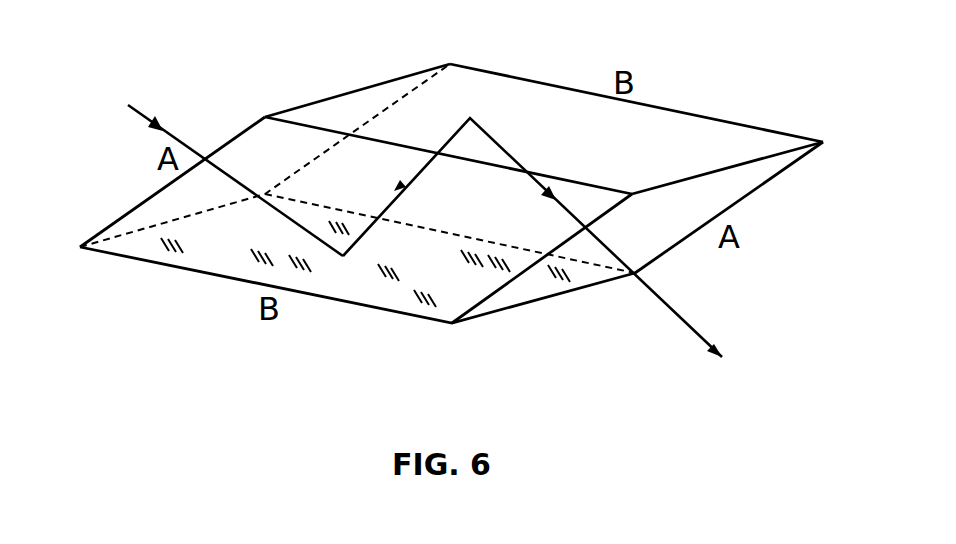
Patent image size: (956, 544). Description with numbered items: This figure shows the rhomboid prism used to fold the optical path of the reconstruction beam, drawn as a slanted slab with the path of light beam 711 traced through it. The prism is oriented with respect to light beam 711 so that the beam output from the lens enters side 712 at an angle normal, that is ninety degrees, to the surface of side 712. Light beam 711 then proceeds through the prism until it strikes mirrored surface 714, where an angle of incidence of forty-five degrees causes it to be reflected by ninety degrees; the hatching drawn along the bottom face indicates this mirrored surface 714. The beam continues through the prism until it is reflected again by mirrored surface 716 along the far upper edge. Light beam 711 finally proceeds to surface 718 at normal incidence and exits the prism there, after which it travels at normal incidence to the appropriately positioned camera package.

The light beam 711 is at (128, 106).
The side 712 is at (252, 148).
The mirrored surface 714 is at (365, 270).
The mirrored surface 716 is at (495, 88).
The surface 718 is at (723, 195).